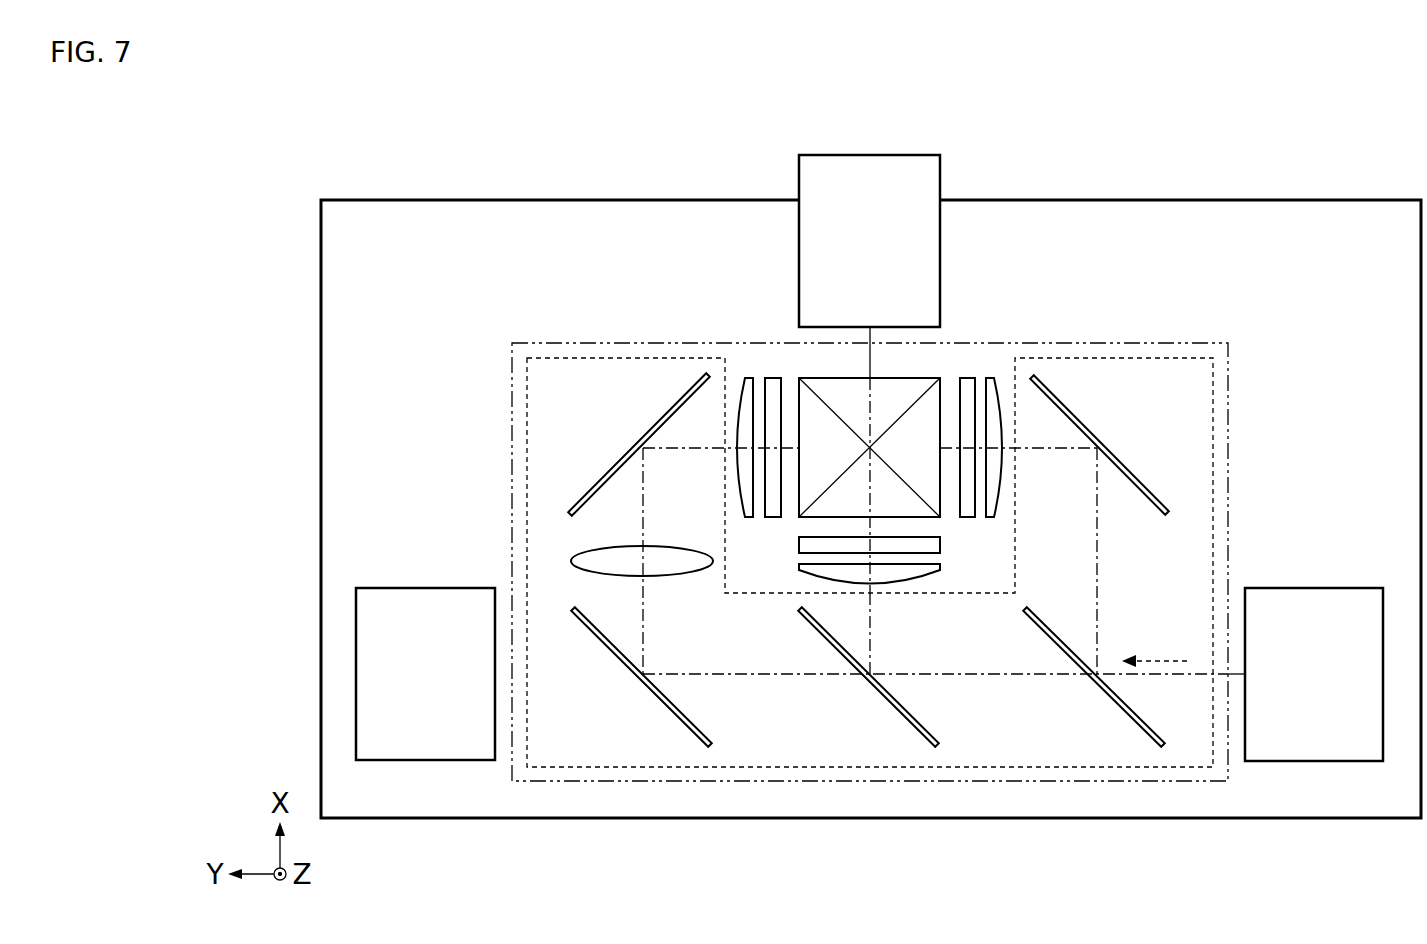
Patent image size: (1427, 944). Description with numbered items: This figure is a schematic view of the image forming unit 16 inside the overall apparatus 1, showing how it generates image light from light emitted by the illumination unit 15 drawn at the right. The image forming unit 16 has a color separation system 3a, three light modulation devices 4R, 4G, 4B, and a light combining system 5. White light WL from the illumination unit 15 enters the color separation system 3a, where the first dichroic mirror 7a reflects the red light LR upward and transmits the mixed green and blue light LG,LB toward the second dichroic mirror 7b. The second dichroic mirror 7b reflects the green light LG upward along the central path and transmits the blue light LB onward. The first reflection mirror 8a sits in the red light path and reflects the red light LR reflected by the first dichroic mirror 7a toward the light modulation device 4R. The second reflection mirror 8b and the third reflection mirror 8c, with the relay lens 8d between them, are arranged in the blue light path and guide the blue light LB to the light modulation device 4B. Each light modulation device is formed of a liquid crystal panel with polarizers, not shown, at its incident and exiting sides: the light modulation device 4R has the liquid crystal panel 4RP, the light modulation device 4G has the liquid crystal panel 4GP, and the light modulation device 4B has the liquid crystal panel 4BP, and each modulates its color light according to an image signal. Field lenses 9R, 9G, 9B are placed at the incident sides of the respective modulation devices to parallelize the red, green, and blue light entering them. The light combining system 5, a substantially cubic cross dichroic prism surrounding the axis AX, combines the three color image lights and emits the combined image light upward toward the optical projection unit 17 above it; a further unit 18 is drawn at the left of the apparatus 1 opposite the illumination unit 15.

The projector 1 is at (518, 326).
The image forming unit 16 is at (1228, 344).
The color separation system 3a is at (1213, 503).
The projection optical device 17 is at (940, 172).
The light source device 18 is at (425, 760).
The illumination unit 15 is at (1311, 761).
The light combining system 5 is at (849, 387).
The light modulation device 4B is at (748, 386).
The liquid crystal panel 4BP is at (773, 397).
The light modulation device 4R is at (989, 386).
The liquid crystal panel 4RP is at (972, 397).
The light modulation device 4G is at (880, 533).
The liquid crystal panel 4GP is at (933, 545).
The field lens 9B is at (750, 398).
The field lens 9R is at (990, 397).
The field lens 9G is at (933, 568).
The first reflection mirror 8a is at (1123, 462).
The second reflection mirror 8b is at (617, 658).
The third reflection mirror 8c is at (613, 465).
The relay lens 8d is at (585, 560).
The first dichroic mirror 7a is at (1118, 710).
The second dichroic mirror 7b is at (893, 712).
The optical axis AX is at (870, 357).
The blue light LB is at (643, 619).
The green light LG is at (870, 630).
The red light LR is at (1097, 550).
The mixture of green light and blue light LG,LB is at (1026, 683).
The white light WL is at (1165, 660).